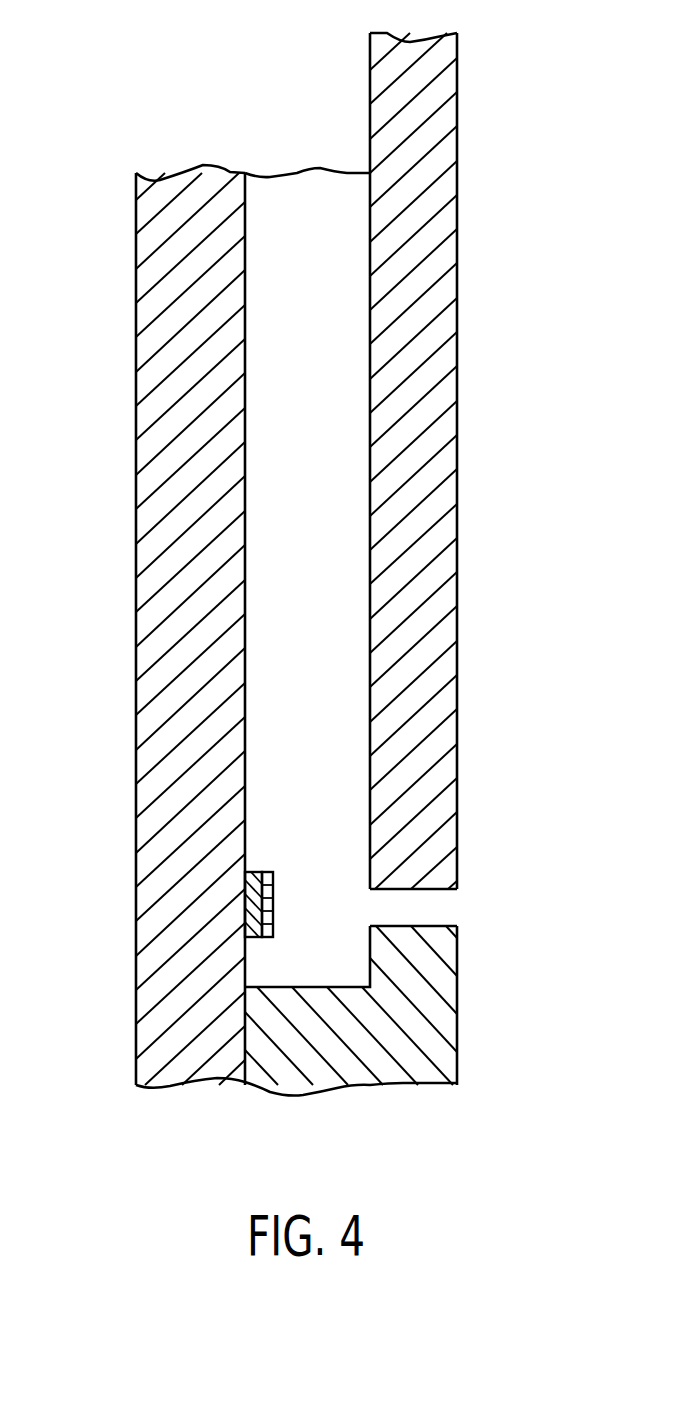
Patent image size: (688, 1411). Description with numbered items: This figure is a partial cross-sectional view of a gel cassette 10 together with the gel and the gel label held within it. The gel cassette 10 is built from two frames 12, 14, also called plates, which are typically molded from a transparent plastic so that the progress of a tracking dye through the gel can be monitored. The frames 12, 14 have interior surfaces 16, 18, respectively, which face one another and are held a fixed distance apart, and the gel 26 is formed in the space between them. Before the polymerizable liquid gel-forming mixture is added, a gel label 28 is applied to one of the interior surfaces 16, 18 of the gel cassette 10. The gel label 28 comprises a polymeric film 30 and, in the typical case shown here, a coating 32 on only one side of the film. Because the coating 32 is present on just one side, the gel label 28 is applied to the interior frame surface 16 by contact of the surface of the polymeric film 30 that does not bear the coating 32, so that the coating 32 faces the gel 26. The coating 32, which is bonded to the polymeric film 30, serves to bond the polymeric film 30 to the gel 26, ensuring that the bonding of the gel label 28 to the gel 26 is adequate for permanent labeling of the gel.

The gel cassette 10 is at (135, 78).
The frame 12 is at (150, 421).
The frame 14 is at (433, 298).
The interior surface 16 is at (244, 572).
The interior surface 18 is at (370, 502).
The gel 26 is at (317, 650).
The gel label 28 is at (240, 923).
The polymeric film 30 is at (244, 876).
The coating 32 is at (273, 899).